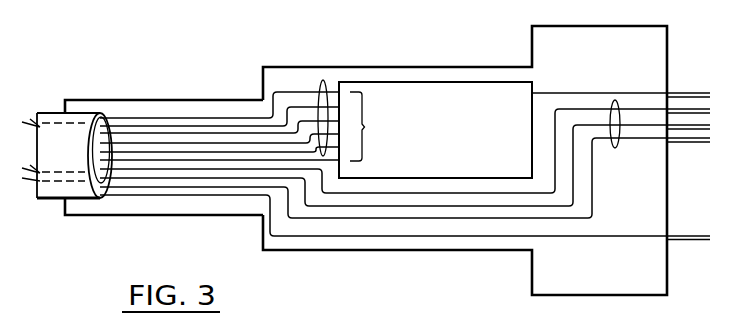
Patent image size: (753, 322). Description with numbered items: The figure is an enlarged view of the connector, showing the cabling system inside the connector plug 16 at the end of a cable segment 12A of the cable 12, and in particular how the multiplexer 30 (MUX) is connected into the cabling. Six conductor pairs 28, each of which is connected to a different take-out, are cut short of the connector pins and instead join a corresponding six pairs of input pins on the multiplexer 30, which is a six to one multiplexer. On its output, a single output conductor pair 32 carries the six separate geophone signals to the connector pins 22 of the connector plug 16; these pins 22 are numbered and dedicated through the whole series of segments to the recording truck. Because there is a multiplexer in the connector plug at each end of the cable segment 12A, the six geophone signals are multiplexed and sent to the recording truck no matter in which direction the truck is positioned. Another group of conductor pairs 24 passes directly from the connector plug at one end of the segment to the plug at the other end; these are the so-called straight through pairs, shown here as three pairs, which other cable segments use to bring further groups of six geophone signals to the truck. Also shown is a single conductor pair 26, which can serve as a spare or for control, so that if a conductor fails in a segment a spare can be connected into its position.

The cable 12 is at (50, 201).
The cable segment 12A is at (170, 98).
The connector plug 16 is at (483, 66).
The connector pins 22 is at (683, 91).
The straight through conductor pairs 24 is at (372, 194).
The spare conductor pair 26 is at (487, 238).
The P conductor pairs 28 is at (320, 85).
The multiplexer 30 is at (418, 180).
The output conductor pair 32 is at (551, 93).